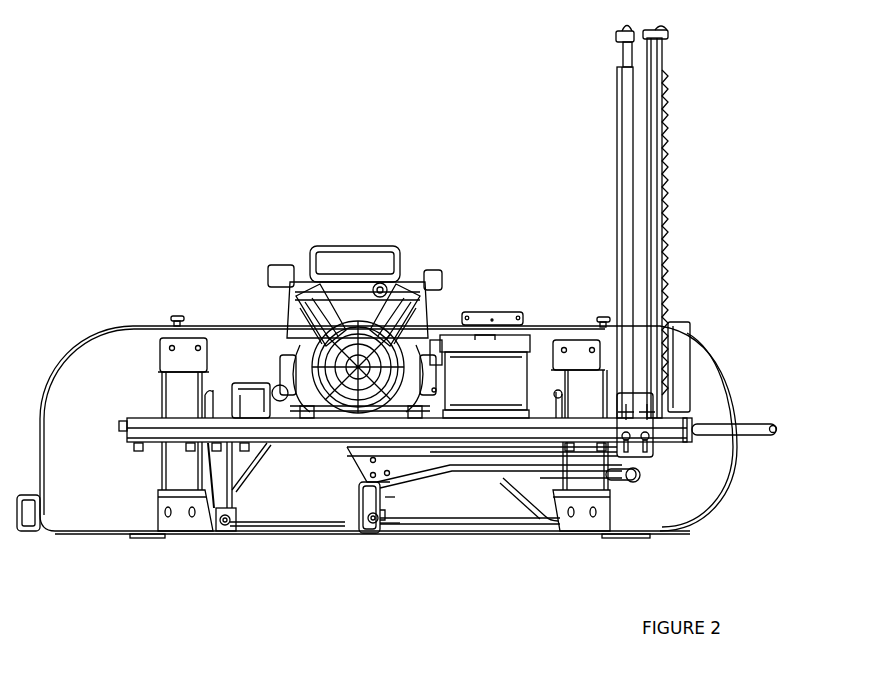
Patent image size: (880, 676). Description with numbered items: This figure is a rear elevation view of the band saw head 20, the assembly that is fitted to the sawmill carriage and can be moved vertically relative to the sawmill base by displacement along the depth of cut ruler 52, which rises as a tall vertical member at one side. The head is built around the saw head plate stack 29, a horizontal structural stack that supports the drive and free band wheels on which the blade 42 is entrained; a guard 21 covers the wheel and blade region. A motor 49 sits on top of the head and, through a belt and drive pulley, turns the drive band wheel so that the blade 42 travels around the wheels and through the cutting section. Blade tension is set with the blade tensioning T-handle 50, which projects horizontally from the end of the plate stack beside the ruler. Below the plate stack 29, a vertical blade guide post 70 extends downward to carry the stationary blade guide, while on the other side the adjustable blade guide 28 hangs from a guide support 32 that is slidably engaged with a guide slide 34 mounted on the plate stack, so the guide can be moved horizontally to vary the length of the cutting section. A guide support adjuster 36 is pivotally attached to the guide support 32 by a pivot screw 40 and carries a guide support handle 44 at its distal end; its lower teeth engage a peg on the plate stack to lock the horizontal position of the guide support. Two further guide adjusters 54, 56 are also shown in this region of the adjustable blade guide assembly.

The guard 21 is at (103, 362).
The saw head plate stack 29 is at (150, 433).
The band saw head 20 is at (227, 531).
The vertical blade guide post 70 is at (232, 490).
The blade 42 is at (306, 533).
The motor 49 is at (442, 283).
The depth of cut ruler 52 is at (658, 153).
The blade tensioning T-handle 50 is at (775, 425).
The guide support handle 44 is at (640, 476).
The guide slide 34 is at (347, 448).
The guide support 32 is at (360, 465).
The pivot screw 40 is at (389, 476).
The adjustable blade guide 28 is at (372, 540).
The guide support adjuster 36 is at (481, 470).
The guide adjuster 54 is at (380, 523).
The guide adjuster 56 is at (385, 495).